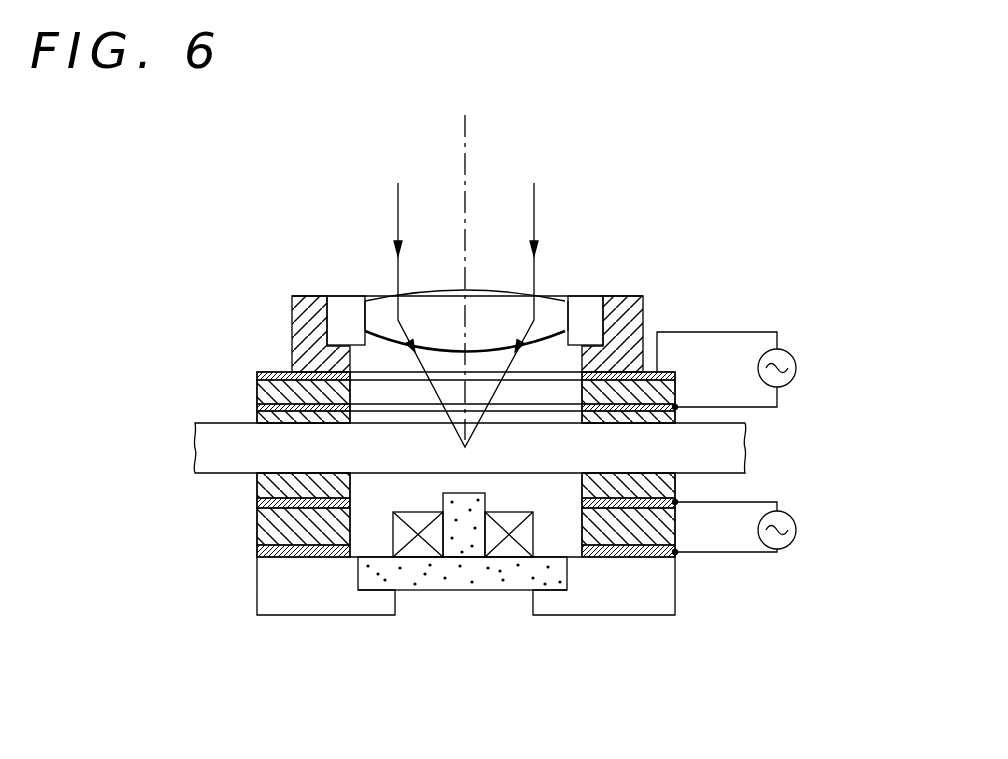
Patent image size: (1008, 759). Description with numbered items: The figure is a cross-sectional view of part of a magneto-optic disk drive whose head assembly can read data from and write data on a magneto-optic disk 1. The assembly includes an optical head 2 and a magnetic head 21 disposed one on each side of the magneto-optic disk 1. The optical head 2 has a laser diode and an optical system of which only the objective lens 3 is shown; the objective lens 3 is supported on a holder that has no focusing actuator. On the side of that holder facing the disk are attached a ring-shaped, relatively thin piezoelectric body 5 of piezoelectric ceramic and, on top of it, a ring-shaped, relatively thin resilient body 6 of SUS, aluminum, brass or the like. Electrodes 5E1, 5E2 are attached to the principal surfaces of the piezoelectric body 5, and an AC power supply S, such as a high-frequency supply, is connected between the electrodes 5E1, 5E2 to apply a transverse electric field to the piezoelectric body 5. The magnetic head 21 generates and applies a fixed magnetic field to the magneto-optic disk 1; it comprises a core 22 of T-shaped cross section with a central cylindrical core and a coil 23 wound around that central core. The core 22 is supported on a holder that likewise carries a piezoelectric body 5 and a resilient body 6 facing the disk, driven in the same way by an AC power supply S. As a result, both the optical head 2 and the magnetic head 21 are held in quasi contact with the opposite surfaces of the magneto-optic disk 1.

The magneto-optic disk 1 is at (732, 442).
The optical head 2 is at (641, 290).
The objective lens 3 is at (551, 320).
The piezoelectric body 5 is at (287, 383).
The resilient body 6 is at (257, 388).
The electrode 5E1 is at (257, 373).
The electrode 5E2 is at (257, 402).
The magnetic head 21 is at (495, 578).
The core 22 is at (453, 527).
The coil 23 is at (397, 537).
The AC power supply S is at (798, 366).